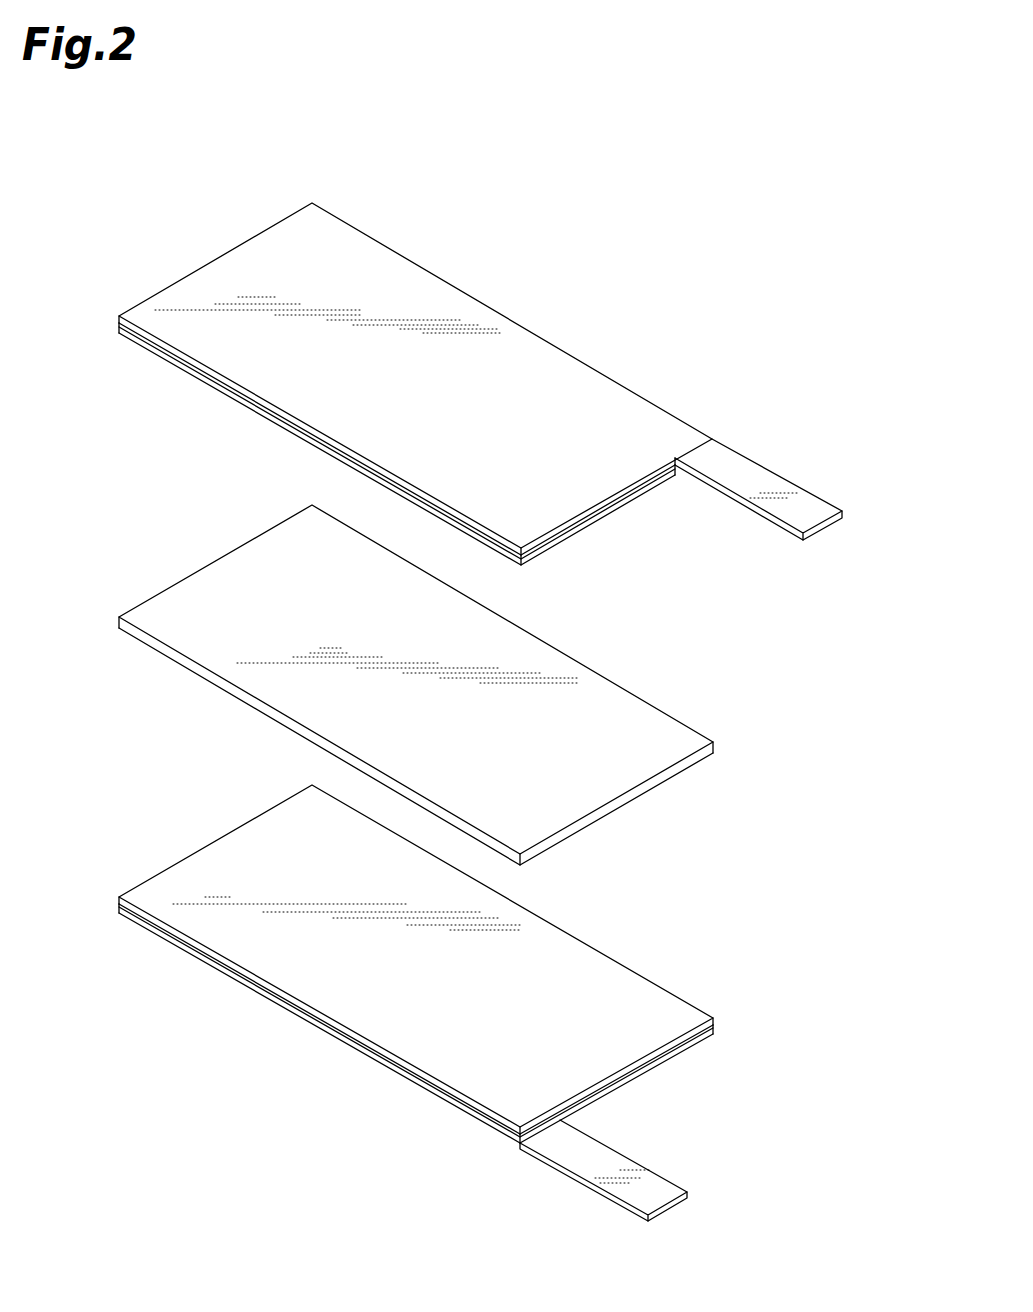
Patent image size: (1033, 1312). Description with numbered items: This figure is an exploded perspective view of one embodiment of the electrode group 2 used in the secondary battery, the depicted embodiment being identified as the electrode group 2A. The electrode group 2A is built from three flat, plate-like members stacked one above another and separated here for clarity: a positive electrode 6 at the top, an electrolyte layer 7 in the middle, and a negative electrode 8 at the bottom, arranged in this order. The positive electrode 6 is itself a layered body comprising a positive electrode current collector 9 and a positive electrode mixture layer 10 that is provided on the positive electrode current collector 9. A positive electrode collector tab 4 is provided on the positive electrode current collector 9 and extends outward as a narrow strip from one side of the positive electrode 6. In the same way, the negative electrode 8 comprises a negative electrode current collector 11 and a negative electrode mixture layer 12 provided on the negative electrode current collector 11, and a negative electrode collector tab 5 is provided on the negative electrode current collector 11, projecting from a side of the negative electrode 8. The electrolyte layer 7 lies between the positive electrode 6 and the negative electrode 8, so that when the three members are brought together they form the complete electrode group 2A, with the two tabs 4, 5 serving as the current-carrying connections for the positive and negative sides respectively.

The electrode group 2 is at (498, 684).
The electrode group 2A is at (708, 213).
The positive electrode collector tab 4 is at (812, 516).
The negative electrode collector tab 5 is at (650, 1197).
The positive electrode 6 is at (685, 372).
The electrolyte layer 7 is at (650, 721).
The negative electrode 8 is at (684, 970).
The positive electrode current collector 9 is at (353, 243).
The positive electrode mixture layer 10 is at (597, 517).
The negative electrode current collector 11 is at (620, 1090).
The negative electrode mixture layer 12 is at (638, 1033).